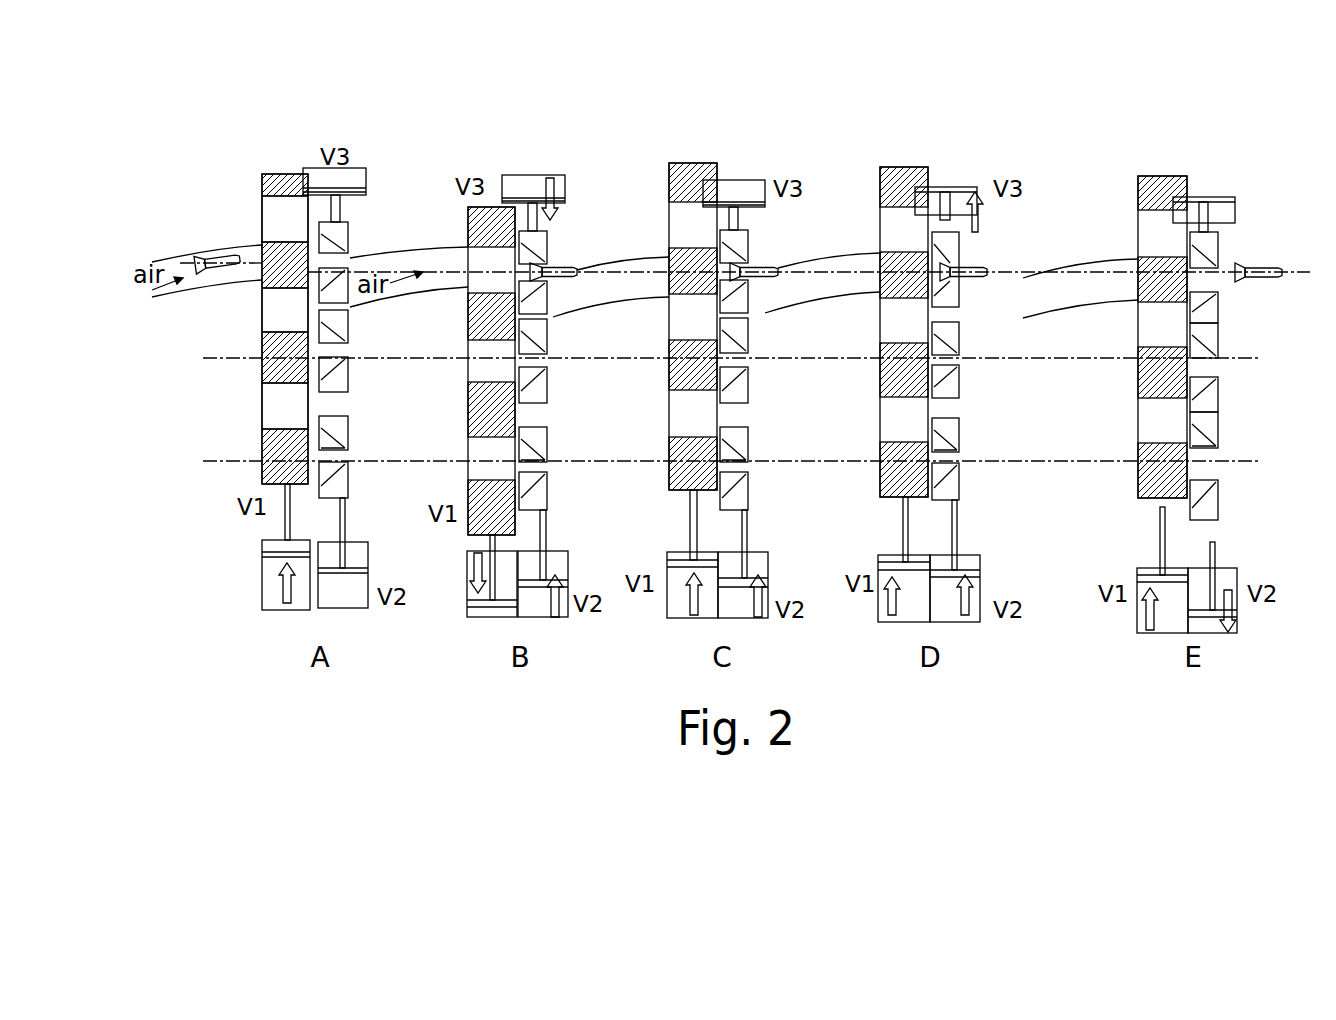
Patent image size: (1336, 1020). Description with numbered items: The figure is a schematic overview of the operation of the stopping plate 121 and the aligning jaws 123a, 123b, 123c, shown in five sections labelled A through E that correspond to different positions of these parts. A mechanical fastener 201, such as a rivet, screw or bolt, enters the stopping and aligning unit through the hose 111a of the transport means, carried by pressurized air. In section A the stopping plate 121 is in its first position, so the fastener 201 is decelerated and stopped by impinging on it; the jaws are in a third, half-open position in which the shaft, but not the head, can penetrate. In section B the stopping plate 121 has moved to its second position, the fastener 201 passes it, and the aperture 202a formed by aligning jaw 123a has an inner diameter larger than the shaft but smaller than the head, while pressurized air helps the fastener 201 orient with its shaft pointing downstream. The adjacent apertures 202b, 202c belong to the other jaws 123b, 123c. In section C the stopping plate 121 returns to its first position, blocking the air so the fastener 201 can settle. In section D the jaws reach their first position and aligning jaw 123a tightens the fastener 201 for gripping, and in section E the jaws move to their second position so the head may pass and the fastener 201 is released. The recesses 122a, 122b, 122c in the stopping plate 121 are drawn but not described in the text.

The hose 111a is at (185, 250).
The stopping plate 121 is at (287, 177).
The first recess of stepping bar 122a is at (267, 210).
The second recess of stepping bar 122b is at (270, 310).
The third recess of stepping bar 122c is at (272, 405).
The aligning jaw 123a is at (345, 283).
The aligning jaw 123b is at (333, 327).
The aligning jaw 123c is at (333, 430).
The mechanical fastener 201 is at (223, 253).
The aperture 202a is at (548, 275).
The second gate passage 202b is at (540, 360).
The third gate passage 202c is at (535, 465).